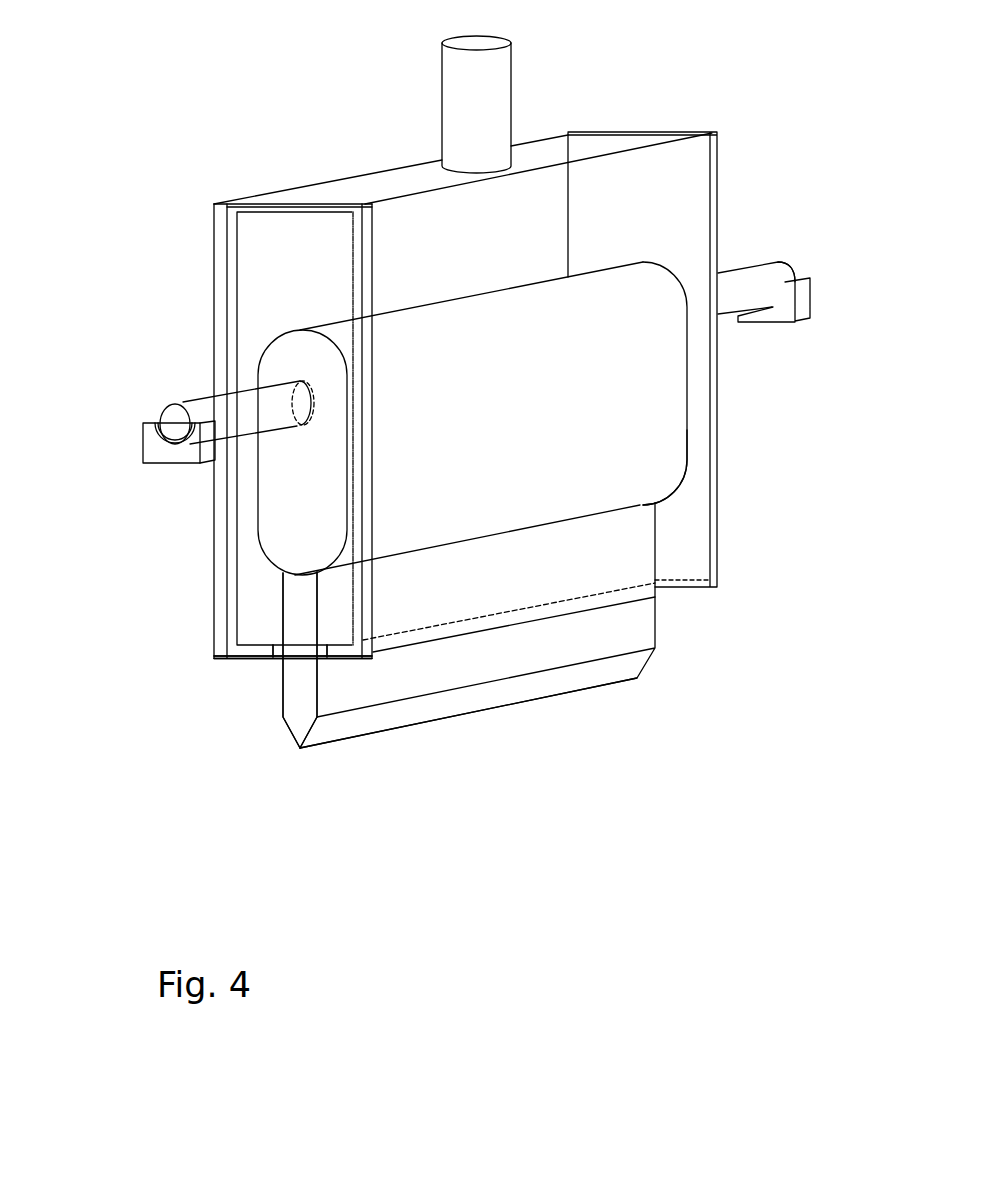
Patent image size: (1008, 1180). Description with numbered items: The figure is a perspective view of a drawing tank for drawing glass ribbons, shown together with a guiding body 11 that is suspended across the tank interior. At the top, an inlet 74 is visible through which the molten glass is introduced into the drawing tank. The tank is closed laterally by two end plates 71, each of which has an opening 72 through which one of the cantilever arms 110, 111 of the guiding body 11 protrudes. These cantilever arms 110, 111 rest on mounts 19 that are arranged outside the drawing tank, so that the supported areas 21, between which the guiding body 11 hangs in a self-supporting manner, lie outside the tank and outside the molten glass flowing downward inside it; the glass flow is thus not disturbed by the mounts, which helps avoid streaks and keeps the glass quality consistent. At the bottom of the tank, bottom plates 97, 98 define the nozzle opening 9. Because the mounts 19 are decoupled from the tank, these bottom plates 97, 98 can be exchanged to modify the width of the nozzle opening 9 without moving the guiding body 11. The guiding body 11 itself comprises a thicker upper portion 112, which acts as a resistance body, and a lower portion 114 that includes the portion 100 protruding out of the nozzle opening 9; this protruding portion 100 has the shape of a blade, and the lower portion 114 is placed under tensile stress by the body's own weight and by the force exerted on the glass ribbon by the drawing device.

The nozzle opening 9 is at (316, 656).
The guiding body 11 is at (688, 450).
The mount 19 is at (153, 465).
The supported area 21 is at (780, 303).
The end plate 71 is at (214, 205).
The opening 72 is at (263, 383).
The inlet 74 is at (515, 108).
The bottom plate 97 is at (213, 659).
The bottom plate 98 is at (343, 652).
The portion of the guiding body protruding out of the nozzle opening 100 is at (658, 648).
The cantilever arm 110 is at (183, 402).
The cantilever arm 111 is at (745, 266).
The upper portion 112 is at (663, 488).
The lower portion 114 is at (622, 667).